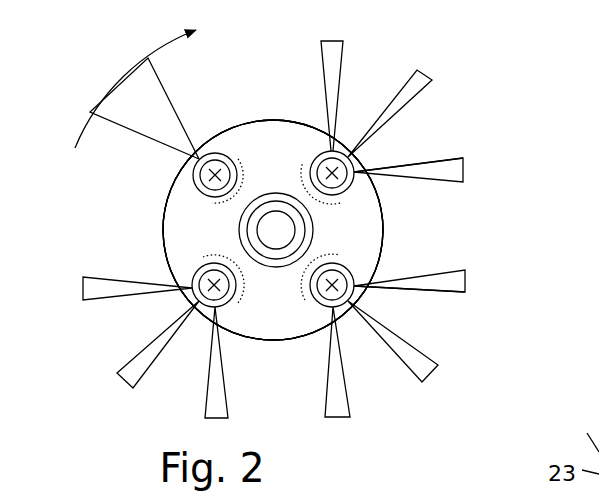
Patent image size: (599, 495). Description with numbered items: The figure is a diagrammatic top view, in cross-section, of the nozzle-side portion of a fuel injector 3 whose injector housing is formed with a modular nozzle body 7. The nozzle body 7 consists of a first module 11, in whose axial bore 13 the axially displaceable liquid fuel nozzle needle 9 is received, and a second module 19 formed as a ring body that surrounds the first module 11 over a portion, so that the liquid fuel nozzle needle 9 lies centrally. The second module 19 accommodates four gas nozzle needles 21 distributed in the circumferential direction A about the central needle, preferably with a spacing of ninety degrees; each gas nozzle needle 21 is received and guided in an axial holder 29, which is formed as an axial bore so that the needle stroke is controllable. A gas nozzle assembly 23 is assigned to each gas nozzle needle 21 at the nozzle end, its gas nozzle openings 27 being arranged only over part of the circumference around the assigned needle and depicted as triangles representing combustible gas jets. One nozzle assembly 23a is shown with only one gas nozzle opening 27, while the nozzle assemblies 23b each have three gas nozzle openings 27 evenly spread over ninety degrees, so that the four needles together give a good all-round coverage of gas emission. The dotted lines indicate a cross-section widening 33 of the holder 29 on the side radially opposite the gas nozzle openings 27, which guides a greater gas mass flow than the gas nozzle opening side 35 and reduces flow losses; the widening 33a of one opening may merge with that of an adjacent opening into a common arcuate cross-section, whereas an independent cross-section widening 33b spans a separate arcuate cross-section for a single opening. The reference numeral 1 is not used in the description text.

The tool 1 is at (185, 212).
The fuel injector 3 is at (250, 116).
The nozzle body 7 is at (356, 220).
The liquid fuel nozzle needle 9 is at (267, 232).
The first module 11 is at (270, 267).
The axial bore 13 is at (277, 207).
The second module 19 is at (185, 230).
The gas nozzle needle 21 is at (215, 160).
The gas nozzle assembly 23 is at (281, 229).
The nozzle assembly 23a is at (193, 163).
The nozzle assembly 23b is at (363, 155).
The gas nozzle opening 27 is at (199, 156).
The axial holder 29 is at (355, 182).
The cross-section widening 33 is at (246, 188).
The cross-section widening 33a is at (296, 150).
The independent cross-section widening 33b is at (305, 298).
The gas nozzle opening side 35 is at (350, 153).
The circumferential direction A is at (135, 74).